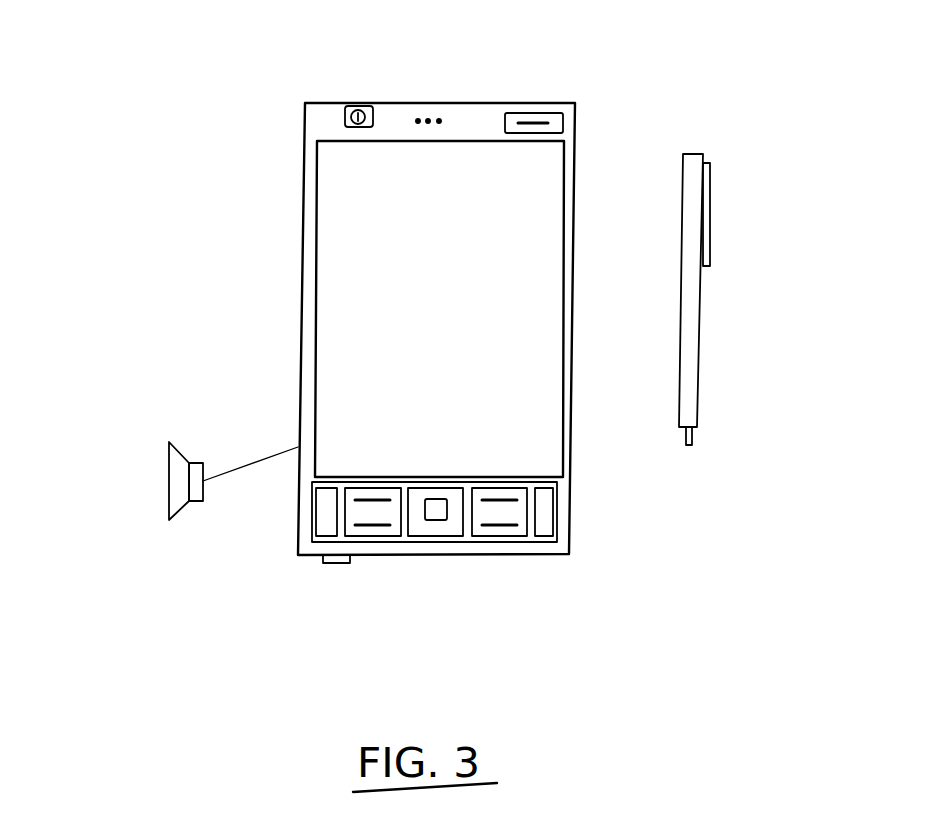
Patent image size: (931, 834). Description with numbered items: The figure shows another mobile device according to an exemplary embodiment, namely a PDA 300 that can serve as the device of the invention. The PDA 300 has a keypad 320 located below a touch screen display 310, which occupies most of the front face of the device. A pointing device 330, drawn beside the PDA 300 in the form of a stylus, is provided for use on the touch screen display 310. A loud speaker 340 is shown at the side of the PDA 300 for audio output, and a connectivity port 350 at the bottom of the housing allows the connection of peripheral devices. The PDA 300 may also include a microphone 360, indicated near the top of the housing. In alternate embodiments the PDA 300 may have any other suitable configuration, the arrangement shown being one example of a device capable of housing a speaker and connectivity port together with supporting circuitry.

The PDA 300 is at (101, 184).
The touch screen display 310 is at (540, 180).
The keypad 320 is at (542, 510).
The pointing device 330 is at (702, 332).
The loud speaker 340 is at (180, 513).
The connectivity port 350 is at (335, 565).
The microphone 360 is at (430, 108).